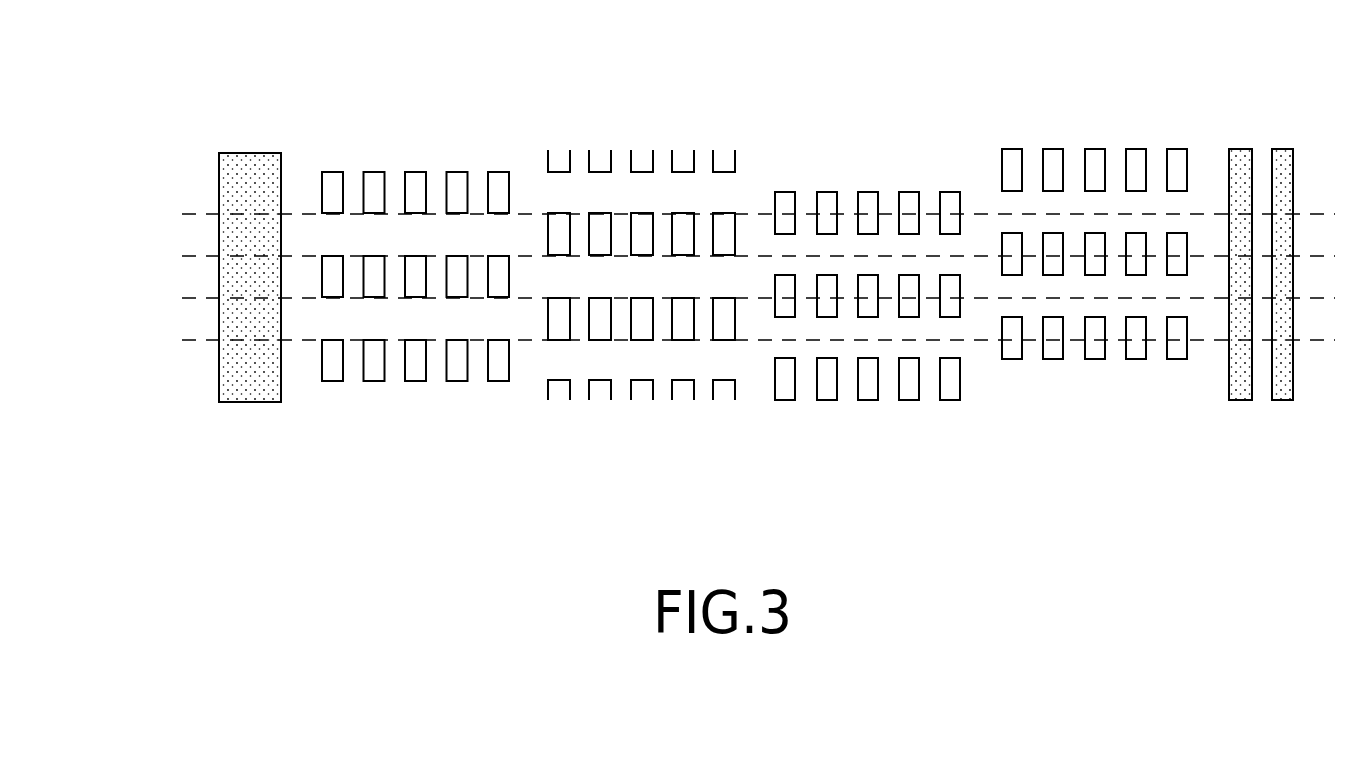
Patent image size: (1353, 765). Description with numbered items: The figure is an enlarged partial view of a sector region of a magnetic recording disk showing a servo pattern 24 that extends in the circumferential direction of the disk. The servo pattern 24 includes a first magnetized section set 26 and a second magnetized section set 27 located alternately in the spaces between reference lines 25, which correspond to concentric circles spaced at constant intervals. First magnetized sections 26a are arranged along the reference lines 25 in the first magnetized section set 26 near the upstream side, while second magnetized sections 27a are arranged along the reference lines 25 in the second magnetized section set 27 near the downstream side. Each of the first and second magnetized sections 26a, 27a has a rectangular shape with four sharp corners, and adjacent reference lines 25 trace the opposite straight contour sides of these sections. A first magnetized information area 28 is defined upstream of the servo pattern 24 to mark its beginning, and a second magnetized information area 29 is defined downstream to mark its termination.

The servo pattern 24 is at (730, 291).
The reference lines 25 is at (189, 214).
The first magnetized section set 26 is at (508, 110).
The first magnetized sections 26a is at (497, 176).
The second magnetized section set 27 is at (733, 110).
The second magnetized sections 27a is at (725, 215).
The first magnetized information area 28 is at (220, 388).
The second magnetized information area 29 is at (1229, 383).